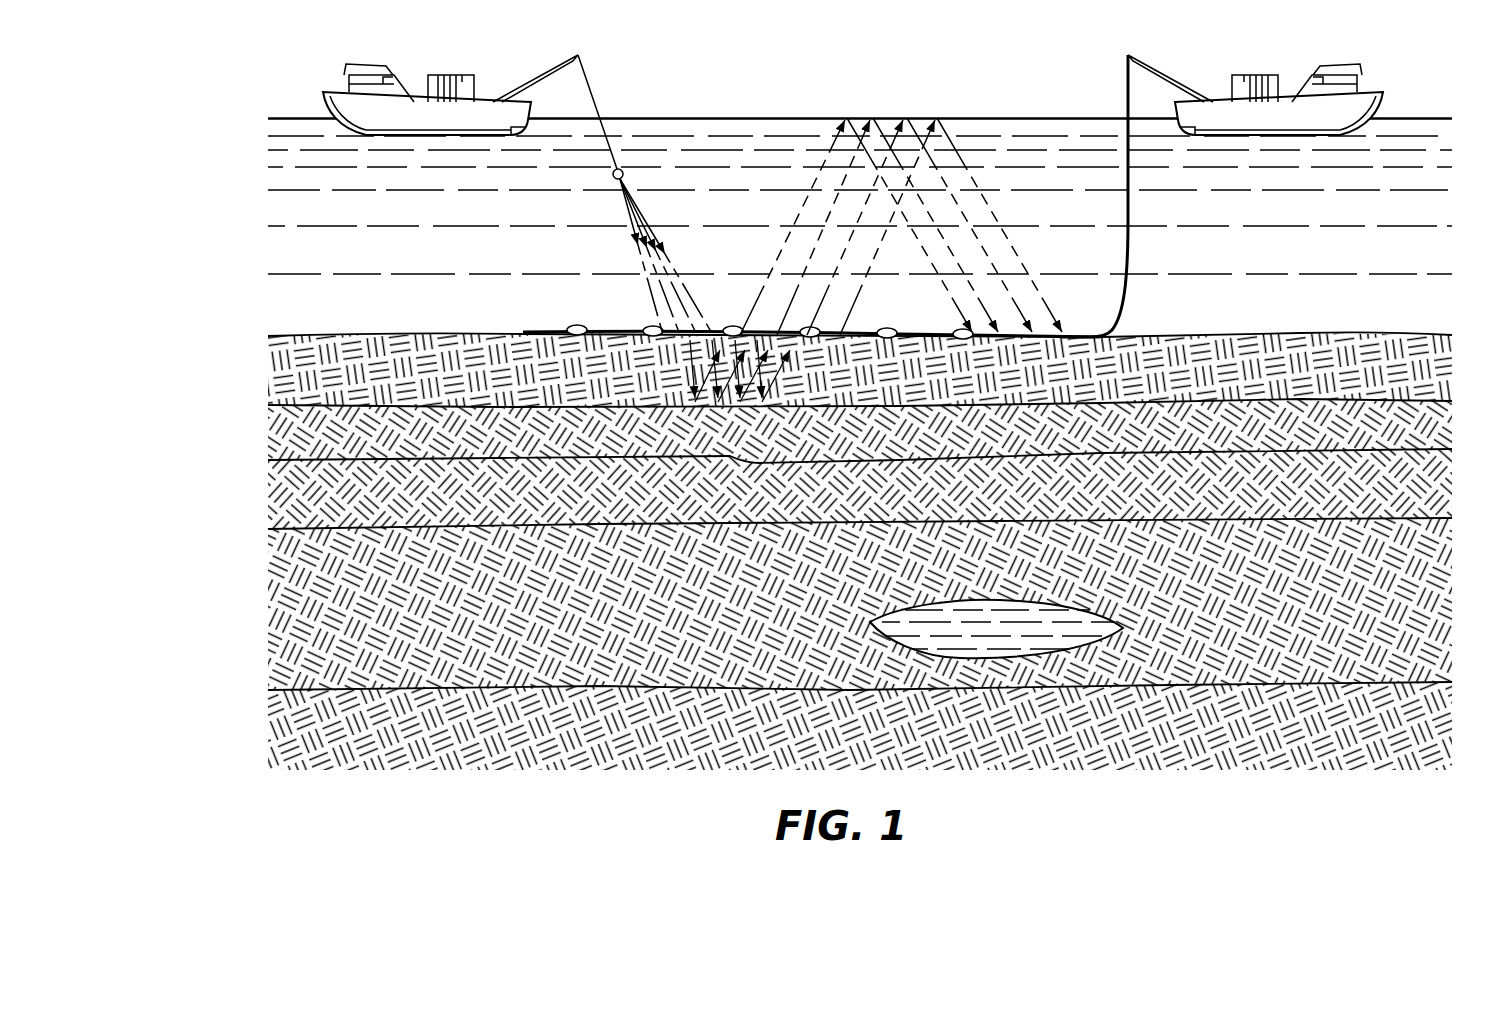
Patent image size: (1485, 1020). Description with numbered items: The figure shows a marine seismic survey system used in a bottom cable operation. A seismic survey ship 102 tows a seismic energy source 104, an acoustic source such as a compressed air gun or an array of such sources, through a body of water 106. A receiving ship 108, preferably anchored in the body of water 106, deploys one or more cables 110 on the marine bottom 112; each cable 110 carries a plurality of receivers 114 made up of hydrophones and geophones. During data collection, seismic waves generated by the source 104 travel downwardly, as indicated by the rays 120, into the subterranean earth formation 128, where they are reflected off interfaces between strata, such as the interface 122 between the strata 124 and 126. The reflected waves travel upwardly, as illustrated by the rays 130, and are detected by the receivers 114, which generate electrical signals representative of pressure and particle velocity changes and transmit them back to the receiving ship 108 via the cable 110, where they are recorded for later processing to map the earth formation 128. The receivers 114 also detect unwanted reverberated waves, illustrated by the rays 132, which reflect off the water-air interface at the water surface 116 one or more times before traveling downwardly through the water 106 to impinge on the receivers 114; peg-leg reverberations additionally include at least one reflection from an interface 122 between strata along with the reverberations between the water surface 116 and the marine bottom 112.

The seismic survey ship 102 is at (374, 72).
The seismic energy source 104 is at (611, 175).
The body of water 106 is at (1383, 263).
The receiving ship 108 is at (1330, 72).
The cable 110 is at (1130, 206).
The marine bottom 112 is at (1338, 335).
The receiver 114 is at (575, 328).
The water surface 116 is at (957, 117).
The downgoing rays 120 is at (660, 252).
The interface between strata 122 is at (1276, 395).
The stratum 124 is at (1153, 372).
The stratum 126 is at (1200, 425).
The subterranean earth formation 128 is at (817, 534).
The upgoing reflected rays 130 is at (840, 256).
The reverberated wave rays 132 is at (930, 250).